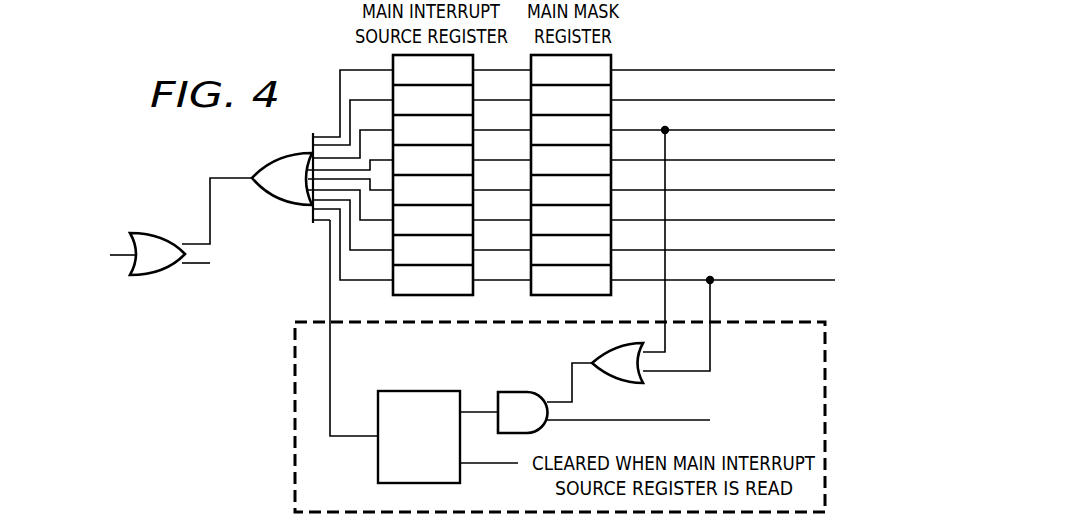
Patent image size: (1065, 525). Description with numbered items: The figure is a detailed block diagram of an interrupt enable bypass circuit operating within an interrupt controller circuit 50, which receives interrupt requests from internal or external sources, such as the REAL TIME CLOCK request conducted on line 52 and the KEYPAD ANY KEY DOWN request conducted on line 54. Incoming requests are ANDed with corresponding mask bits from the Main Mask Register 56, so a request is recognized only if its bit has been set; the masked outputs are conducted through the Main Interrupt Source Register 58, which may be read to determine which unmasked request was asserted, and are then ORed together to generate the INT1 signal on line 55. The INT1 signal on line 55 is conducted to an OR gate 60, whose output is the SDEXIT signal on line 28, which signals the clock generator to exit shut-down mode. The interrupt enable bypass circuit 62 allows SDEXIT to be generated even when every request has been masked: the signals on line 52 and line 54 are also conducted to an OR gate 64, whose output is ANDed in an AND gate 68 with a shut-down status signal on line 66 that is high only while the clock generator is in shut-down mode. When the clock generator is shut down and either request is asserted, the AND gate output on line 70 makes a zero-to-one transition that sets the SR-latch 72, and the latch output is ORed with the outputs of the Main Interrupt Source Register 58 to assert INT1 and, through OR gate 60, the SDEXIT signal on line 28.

The SDEXIT signal line 28 is at (128, 248).
The interrupt controller circuit 50 is at (190, 384).
The REAL TIME CLOCK interrupt request line 52 is at (835, 284).
The KEYPAD ANY KEY DOWN interrupt request line 54 is at (835, 134).
The INT1 signal line 55 is at (203, 196).
The Main Mask Register 56 is at (531, 290).
The Main Interrupt Source Register 58 is at (393, 290).
The OR gate 60 is at (166, 275).
The interrupt enable bypass circuit 62 is at (809, 359).
The OR gate 64 is at (601, 352).
The shut-down status signal line 66 is at (680, 420).
The AND gate 68 is at (530, 392).
The AND gate output line 70 is at (480, 410).
The SR-latch 72 is at (378, 464).